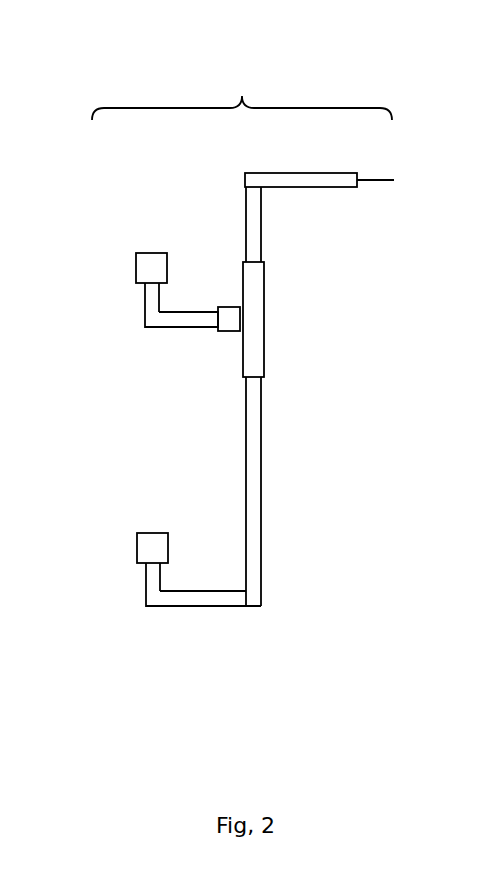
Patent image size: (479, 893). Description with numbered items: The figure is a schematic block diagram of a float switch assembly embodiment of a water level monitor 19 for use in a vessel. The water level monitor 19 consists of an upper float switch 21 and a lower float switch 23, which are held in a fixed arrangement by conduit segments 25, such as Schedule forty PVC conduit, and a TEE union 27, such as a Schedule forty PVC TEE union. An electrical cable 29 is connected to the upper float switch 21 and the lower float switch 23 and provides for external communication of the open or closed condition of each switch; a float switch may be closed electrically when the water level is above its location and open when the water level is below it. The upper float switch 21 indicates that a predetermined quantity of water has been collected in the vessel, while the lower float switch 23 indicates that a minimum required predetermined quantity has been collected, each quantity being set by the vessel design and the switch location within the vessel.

The water level monitor 19 is at (242, 77).
The upper float switch 21 is at (135, 251).
The lower float switch 23 is at (133, 530).
The conduit segments 25 is at (320, 198).
The TEE union 27 is at (275, 337).
The electrical cable 29 is at (383, 189).